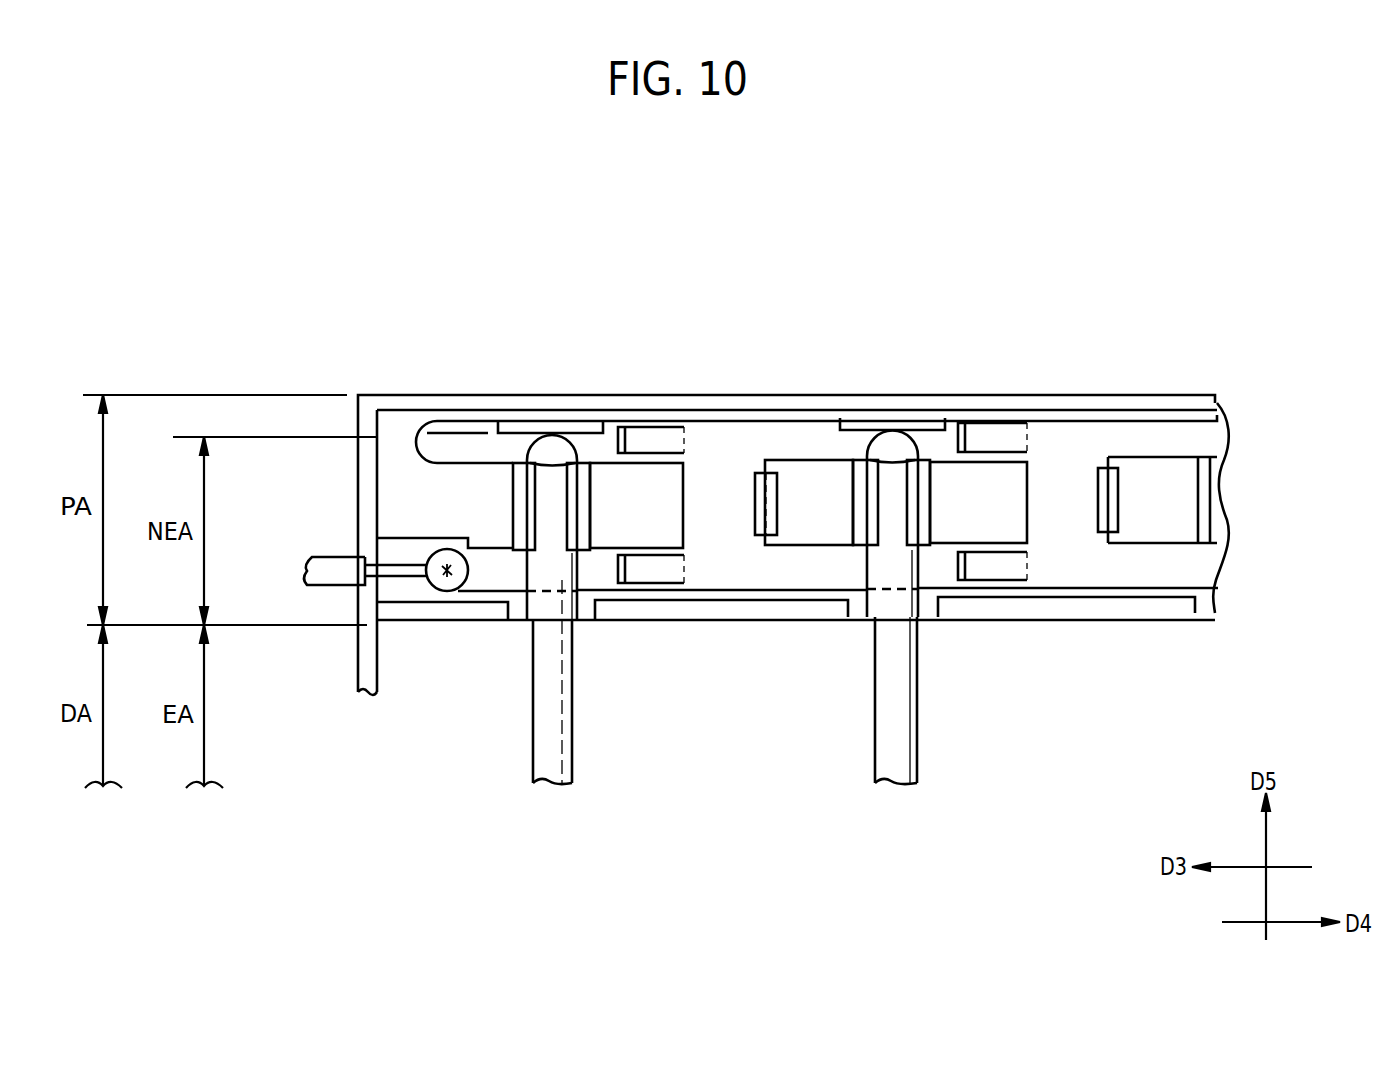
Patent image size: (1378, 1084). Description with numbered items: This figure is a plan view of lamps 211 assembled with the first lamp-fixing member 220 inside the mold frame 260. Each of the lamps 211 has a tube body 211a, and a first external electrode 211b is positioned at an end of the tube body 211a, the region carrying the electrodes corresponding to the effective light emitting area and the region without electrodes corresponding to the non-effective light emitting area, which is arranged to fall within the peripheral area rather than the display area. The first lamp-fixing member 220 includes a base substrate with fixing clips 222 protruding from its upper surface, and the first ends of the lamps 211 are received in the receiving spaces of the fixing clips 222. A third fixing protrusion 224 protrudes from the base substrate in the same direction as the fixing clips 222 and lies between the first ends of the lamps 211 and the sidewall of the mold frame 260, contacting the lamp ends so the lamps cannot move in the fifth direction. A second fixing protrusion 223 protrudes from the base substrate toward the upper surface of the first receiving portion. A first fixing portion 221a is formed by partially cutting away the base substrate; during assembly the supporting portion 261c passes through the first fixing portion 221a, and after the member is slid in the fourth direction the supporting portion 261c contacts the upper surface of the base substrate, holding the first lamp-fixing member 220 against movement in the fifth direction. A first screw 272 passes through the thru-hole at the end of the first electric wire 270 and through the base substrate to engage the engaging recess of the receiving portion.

The mold frame 260 is at (417, 355).
The first lamp-fixing member 220 is at (1247, 452).
The third fixing protrusion 224 is at (533, 430).
The fixing clips 222 is at (583, 472).
The second fixing protrusion 223 is at (645, 438).
The supporting portion 261c is at (757, 478).
The first fixing portion 221a is at (820, 481).
The lamps 211 is at (722, 608).
The tube body 211a is at (558, 689).
The first external electrode 211b is at (575, 620).
The first electric wire 270 is at (322, 557).
The first screw 272 is at (443, 576).